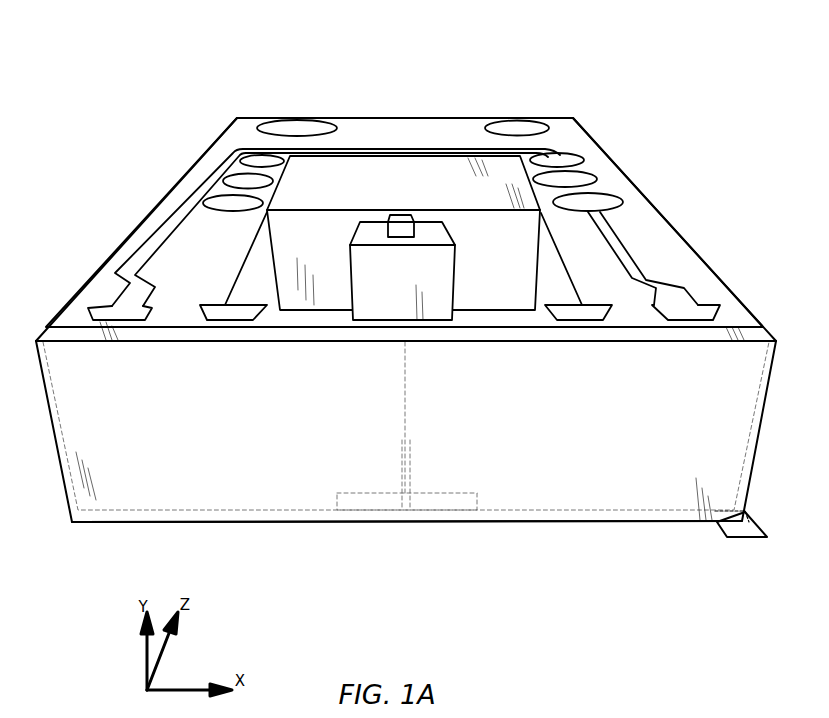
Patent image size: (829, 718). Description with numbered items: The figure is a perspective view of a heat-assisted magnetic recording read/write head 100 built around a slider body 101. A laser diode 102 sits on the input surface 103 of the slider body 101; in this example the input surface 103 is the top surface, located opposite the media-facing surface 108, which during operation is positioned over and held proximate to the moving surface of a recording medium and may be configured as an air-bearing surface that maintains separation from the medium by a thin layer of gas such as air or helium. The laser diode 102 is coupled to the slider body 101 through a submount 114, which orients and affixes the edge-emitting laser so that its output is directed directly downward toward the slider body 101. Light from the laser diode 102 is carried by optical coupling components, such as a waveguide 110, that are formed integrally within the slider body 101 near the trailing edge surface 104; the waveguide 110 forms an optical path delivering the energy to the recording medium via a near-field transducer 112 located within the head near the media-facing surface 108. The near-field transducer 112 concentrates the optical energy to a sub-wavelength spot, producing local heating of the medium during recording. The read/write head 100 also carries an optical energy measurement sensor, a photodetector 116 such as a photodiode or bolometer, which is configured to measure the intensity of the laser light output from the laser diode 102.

The HAMR read/write head 100 is at (394, 331).
The slider body 101 is at (215, 147).
The laser diode 102 is at (458, 270).
The input surface 103 is at (100, 287).
The trailing edge surface 104 is at (130, 500).
The media-facing surface 108 is at (755, 538).
The waveguide 110 is at (405, 483).
The near-field transducer 112 is at (372, 510).
The submount 114 is at (335, 167).
The photodetector 116 is at (402, 215).